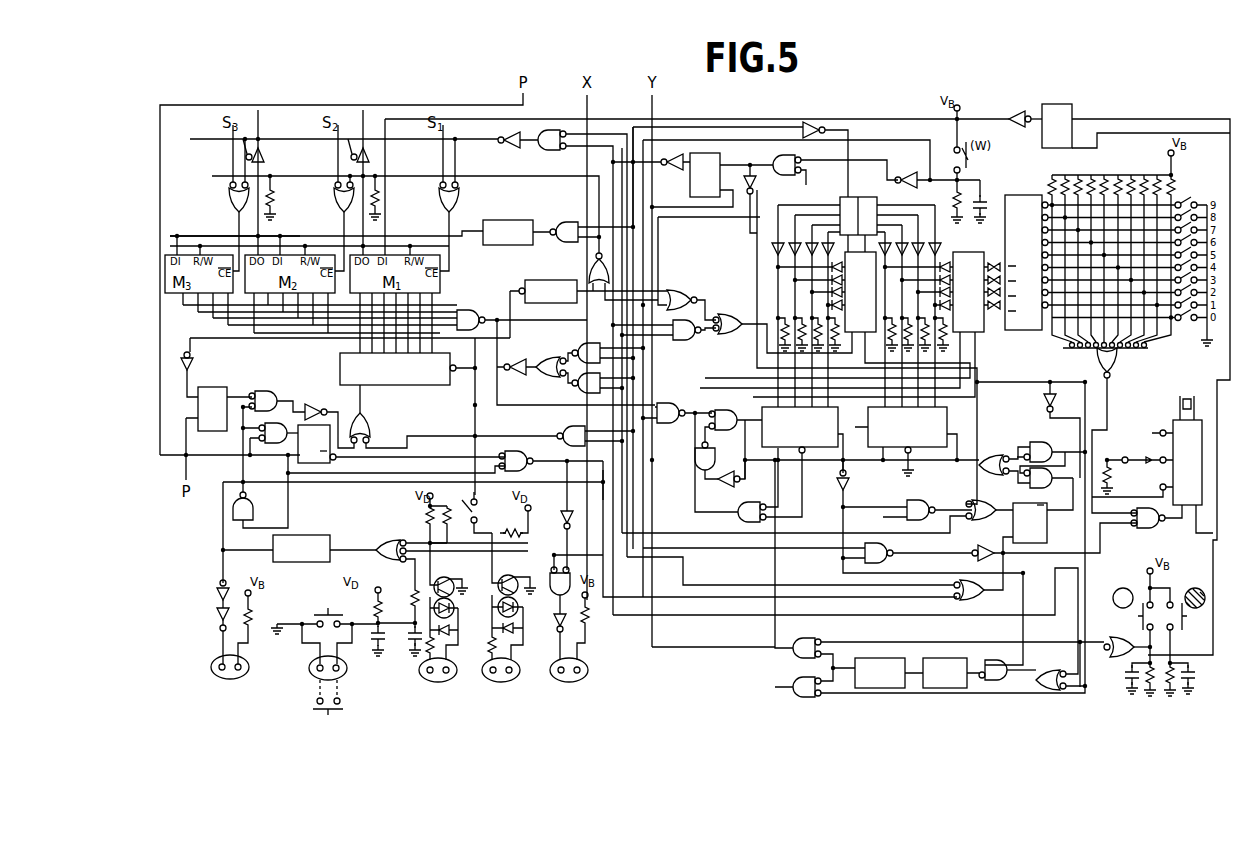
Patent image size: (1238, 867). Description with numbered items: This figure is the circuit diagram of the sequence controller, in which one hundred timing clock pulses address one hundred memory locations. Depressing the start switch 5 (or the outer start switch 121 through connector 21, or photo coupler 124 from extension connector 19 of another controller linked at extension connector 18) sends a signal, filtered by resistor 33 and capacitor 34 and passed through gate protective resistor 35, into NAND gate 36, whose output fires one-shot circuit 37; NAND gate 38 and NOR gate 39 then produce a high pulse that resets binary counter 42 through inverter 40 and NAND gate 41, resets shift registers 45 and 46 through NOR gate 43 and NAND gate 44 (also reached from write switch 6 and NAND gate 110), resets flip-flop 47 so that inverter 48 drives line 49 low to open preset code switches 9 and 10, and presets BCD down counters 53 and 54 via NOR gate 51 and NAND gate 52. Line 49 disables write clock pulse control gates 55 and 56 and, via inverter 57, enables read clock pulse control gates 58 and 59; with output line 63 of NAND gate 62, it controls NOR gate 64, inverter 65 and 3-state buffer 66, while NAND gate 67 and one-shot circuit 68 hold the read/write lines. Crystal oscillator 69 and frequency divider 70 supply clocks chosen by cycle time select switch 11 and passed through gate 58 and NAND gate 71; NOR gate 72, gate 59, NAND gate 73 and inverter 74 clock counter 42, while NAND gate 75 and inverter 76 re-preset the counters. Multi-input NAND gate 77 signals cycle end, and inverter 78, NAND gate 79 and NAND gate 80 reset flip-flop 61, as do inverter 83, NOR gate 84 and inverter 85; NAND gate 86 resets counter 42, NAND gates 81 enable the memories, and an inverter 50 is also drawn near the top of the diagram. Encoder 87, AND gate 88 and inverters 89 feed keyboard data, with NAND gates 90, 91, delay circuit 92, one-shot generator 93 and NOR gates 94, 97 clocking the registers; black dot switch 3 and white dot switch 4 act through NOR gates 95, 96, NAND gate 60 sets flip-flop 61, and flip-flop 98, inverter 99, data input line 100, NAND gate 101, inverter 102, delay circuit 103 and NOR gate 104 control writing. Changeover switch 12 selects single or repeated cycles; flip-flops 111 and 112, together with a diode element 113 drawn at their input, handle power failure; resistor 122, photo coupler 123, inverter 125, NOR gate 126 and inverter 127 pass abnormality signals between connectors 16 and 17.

The black dot switch 3 is at (1186, 611).
The white dot switch 4 is at (1133, 611).
The start switch 5 is at (326, 608).
The write (W) switch 6 is at (973, 161).
The preset code switch 9 is at (872, 197).
The preset code switch 10 is at (843, 197).
The cycle time select switch 11 is at (1125, 457).
The changeover switch 12 is at (480, 510).
The abnormality detection connector 16 is at (501, 680).
The abnormality detection connector 17 is at (569, 680).
The extension connector 18 is at (230, 640).
The extension connector 19 is at (438, 680).
The connector for remote-control start switch 21 is at (318, 668).
The resistor 33 is at (366, 608).
The capacitor 34 is at (387, 635).
The gate protective resistor 35 is at (389, 582).
The 3-input NAND gate 36 is at (379, 542).
The one-shot circuit 37 is at (301, 548).
The 2-input NAND gate 38 is at (252, 506).
The 2-input NOR gate 39 is at (263, 392).
The inverter 40 is at (313, 402).
The 2-input NAND gate 41 is at (370, 428).
The binary counter 42 is at (398, 370).
The 2-input NOR gate 43 is at (682, 291).
The 2-input NAND gate 44 is at (727, 315).
The shift register 45 is at (968, 283).
The shift register 46 is at (860, 283).
The flip-flop 47 is at (690, 188).
The inverter 48 is at (672, 153).
The line 49 is at (633, 188).
The inverter 50 is at (814, 121).
The 2-input NOR gate 51 is at (671, 404).
The 2-input NAND gate 52 is at (725, 411).
The BCD up/down counter 53 is at (907, 430).
The BCD up/down counter 54 is at (800, 430).
The write clock pulse control gate 55 is at (1032, 505).
The write clock pulse control gate 56 is at (589, 344).
The inverter 57 is at (1040, 406).
The read clock pulse control gate 58 is at (1038, 443).
The read clock pulse control gate 59 is at (587, 391).
The 2-input NAND gate 60 is at (968, 600).
The flip-flop 61 is at (1060, 509).
The 3-input NAND gate 62 is at (516, 452).
The output line 63 is at (603, 472).
The 2-input NOR gate 64 is at (552, 131).
The inverter 65 is at (507, 131).
The 3-state buffer 66 is at (317, 152).
The 2-input NAND gate 67 is at (564, 223).
The one-shot pulse generator circuit 68 is at (508, 232).
The crystal oscillator 69 is at (1187, 399).
The frequency divider 70 is at (1166, 459).
The 2-input NAND gate 71 is at (993, 455).
The 2-input NOR gate 72 is at (748, 520).
The 2-input NAND gate 73 is at (549, 359).
The inverter 74 is at (515, 375).
The 2-input NAND gate 75 is at (690, 456).
The inverter 76 is at (729, 471).
The multi-input NAND gate 77 is at (471, 311).
The inverter 78 is at (854, 482).
The 2-input NAND gate 79 is at (920, 501).
The 3-input NAND gate 80 is at (981, 501).
The 2-input NAND gate 81 is at (332, 197).
The inverter 83 is at (908, 171).
The 2-input NOR gate 84 is at (785, 156).
The inverter 85 is at (760, 185).
The 2-input NAND gate 86 is at (571, 427).
The encoder 87 is at (1026, 253).
The multi-input AND gate 88 is at (1105, 361).
The inverter 89 is at (990, 262).
The 2-input NAND gate 90 is at (1046, 672).
The 2-input NAND gate 91 is at (993, 661).
The delay circuit 92 is at (945, 673).
The one-shot pulse generator 93 is at (880, 673).
The 2-input NOR gate 94 is at (806, 678).
The 2-input NOR gate 95 is at (1112, 659).
The 2-input NOR gate 96 is at (1156, 525).
The 2-input NOR gate 97 is at (806, 639).
The flip-flop 98 is at (1063, 117).
The inverter 99 is at (1010, 112).
The data input line 100 is at (389, 227).
The 3-input NAND gate 101 is at (891, 559).
The inverter 102 is at (979, 545).
The delay circuit 103 is at (548, 291).
The 2-input NOR gate 104 is at (593, 266).
The 2-input NAND gate 110 is at (686, 341).
The flip-flop 111 is at (198, 409).
The flip-flop 112 is at (297, 443).
The diode 113 is at (201, 356).
The outer start switch 121 is at (344, 697).
The resistor 122 is at (514, 521).
The photo coupler 123 is at (514, 572).
The photo coupler 124 is at (447, 607).
The inverter 125 is at (582, 519).
The 2-input NOR gate 126 is at (548, 589).
The inverter 127 is at (546, 625).